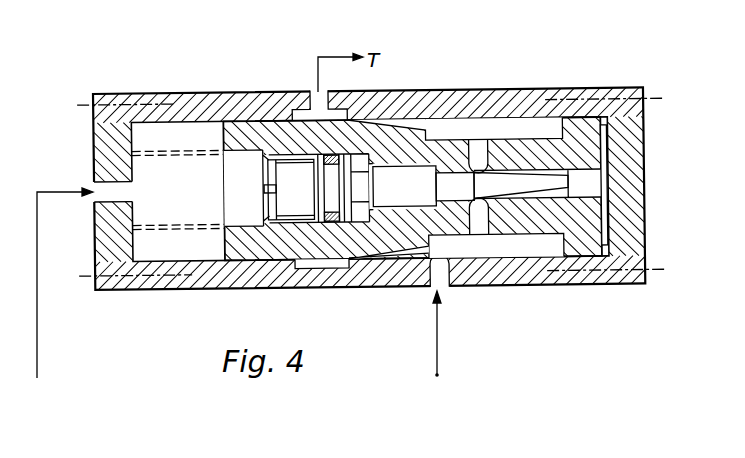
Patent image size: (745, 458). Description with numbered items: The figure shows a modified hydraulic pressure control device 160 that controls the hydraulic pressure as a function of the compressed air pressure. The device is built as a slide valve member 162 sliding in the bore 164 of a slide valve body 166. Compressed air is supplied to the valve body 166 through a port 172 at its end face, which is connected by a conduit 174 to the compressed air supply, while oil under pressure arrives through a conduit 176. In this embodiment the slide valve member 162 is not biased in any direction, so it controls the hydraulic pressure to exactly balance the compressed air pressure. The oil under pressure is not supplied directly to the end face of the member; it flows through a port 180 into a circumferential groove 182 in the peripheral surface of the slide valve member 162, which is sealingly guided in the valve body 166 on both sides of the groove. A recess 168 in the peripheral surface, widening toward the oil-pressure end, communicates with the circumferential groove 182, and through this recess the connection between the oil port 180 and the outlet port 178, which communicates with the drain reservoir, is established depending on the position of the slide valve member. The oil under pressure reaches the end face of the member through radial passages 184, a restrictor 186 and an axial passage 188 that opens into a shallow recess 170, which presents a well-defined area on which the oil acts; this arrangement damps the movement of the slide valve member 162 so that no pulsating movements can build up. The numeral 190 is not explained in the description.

The hydraulic pressure control device 160 is at (466, 84).
The slide valve member 162 is at (253, 135).
The bore 164 is at (178, 204).
The slide valve body 166 is at (553, 102).
The recess 168 is at (413, 256).
The shallow recess 170 is at (603, 147).
The port 172 is at (113, 190).
The conduit 174 is at (42, 327).
The conduit 176 is at (437, 355).
The outlet port 178 is at (318, 102).
The port 180 is at (437, 268).
The circumferential groove 182 is at (548, 243).
The radial passages 184 is at (475, 150).
The restrictor 186 is at (518, 192).
The axial passage 188 is at (590, 185).
The spool 190 is at (294, 183).